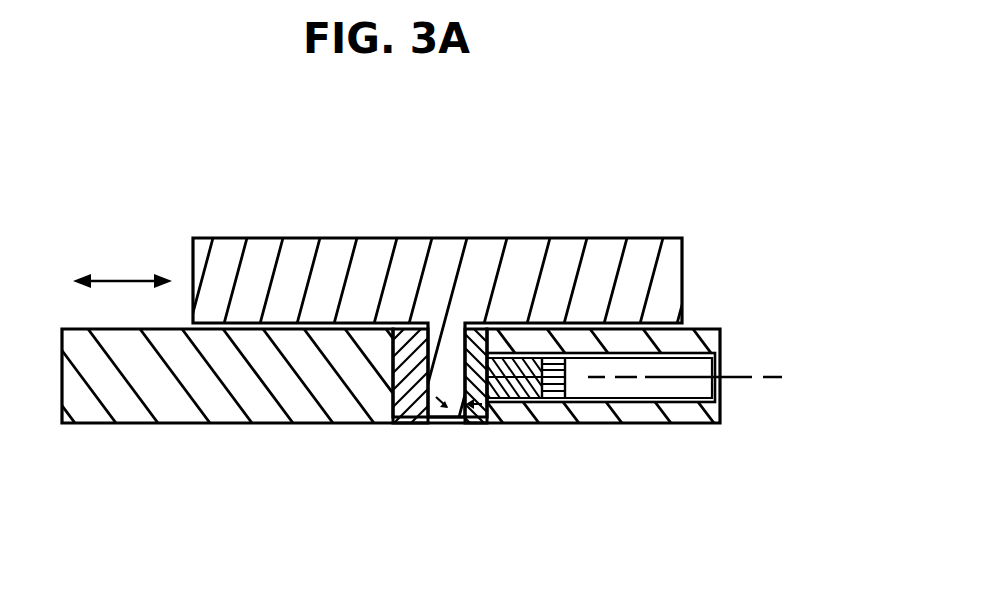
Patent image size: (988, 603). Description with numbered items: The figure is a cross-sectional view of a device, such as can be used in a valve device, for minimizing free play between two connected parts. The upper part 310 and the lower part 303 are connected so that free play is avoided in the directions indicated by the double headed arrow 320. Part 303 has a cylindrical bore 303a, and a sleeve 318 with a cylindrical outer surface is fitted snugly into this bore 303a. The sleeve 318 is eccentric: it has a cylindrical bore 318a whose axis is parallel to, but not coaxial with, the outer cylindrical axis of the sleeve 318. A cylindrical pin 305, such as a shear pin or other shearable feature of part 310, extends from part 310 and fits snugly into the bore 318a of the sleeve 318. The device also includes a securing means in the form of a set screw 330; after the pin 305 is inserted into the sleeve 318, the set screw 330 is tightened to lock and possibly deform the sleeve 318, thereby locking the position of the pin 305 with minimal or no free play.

The part 310 is at (388, 250).
The pin 305 is at (445, 423).
The part 303 is at (212, 410).
The cylindrical bore 303a is at (389, 413).
The sleeve 318 is at (402, 423).
The eccentric bore 318a is at (494, 422).
The set screw 330 is at (523, 402).
The double headed arrow 320 is at (118, 280).